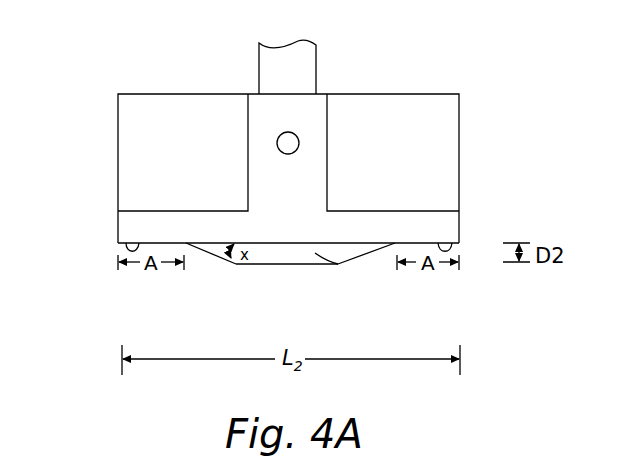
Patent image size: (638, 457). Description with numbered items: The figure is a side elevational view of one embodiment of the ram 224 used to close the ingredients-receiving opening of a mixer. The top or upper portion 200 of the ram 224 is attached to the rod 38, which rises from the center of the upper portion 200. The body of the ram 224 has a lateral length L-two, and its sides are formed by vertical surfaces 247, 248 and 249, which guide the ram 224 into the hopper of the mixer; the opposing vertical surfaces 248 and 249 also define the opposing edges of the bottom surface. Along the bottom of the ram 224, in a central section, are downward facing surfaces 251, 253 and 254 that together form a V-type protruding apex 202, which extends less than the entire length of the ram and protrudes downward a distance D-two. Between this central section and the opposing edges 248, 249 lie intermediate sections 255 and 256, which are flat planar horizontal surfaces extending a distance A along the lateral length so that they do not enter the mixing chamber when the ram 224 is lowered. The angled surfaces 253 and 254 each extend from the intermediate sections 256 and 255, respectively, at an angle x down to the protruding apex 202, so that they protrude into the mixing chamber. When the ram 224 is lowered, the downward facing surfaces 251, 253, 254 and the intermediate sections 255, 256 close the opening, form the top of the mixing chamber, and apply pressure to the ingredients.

The ram 224 is at (145, 79).
The rod 38 is at (259, 52).
The upper portion 200 is at (388, 93).
The vertical surface 249 is at (118, 138).
The vertical surface 248 is at (459, 133).
The vertical surface 247 is at (428, 228).
The intermediate section 255 is at (452, 250).
The intermediate section 256 is at (124, 250).
The downward facing surface 253 is at (212, 254).
The downward facing surface 254 is at (362, 257).
The protruding apex 202 is at (286, 265).
The downward facing surface 251 is at (340, 265).